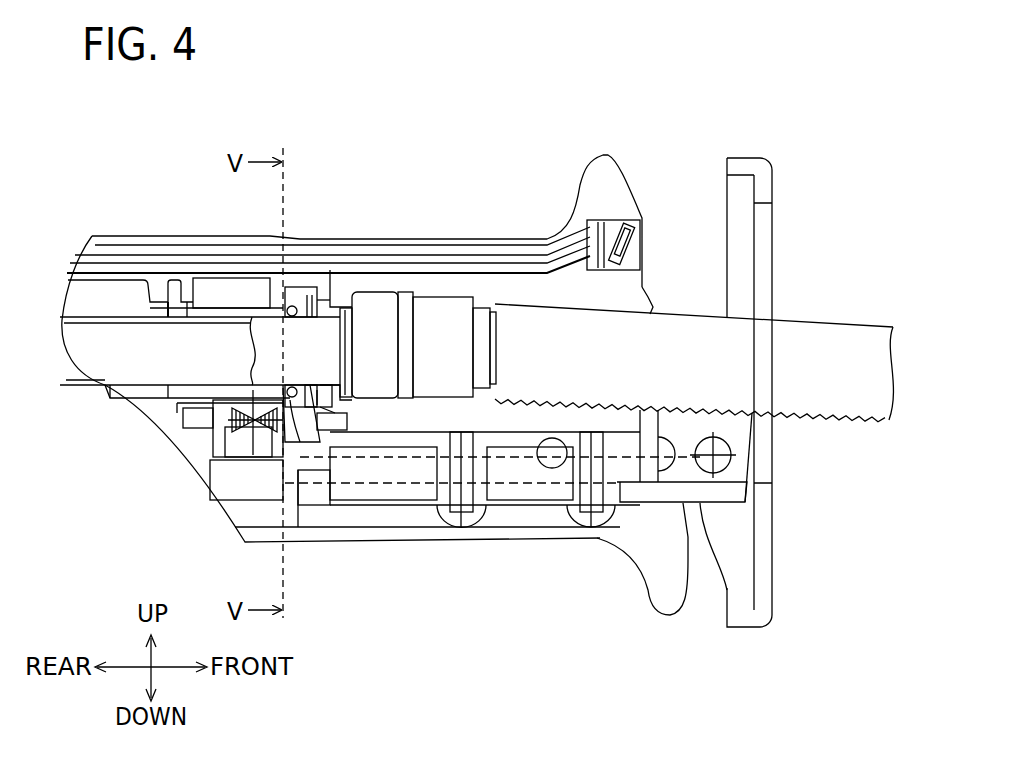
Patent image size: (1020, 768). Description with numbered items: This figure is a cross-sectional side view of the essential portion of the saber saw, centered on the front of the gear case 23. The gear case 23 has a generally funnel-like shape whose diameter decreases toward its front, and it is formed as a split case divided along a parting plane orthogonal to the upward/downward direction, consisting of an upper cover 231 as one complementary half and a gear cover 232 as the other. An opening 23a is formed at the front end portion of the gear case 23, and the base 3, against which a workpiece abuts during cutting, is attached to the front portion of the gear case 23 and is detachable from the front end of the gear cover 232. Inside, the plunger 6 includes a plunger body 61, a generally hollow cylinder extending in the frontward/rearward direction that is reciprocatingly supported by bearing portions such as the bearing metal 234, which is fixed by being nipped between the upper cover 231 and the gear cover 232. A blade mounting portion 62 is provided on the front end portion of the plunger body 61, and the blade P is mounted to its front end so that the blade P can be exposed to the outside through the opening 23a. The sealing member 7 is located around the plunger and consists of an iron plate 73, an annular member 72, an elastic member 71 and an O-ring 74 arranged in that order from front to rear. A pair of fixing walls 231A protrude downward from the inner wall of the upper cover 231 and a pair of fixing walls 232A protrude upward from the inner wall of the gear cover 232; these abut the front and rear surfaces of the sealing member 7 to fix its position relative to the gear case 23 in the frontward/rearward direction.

The base 3 is at (742, 185).
The plunger 6 is at (106, 387).
The sealing member 7 is at (307, 285).
The gear case 23 is at (463, 236).
The opening 23a is at (645, 286).
The plunger body 61 is at (120, 335).
The blade mounting portion 62 is at (378, 300).
The elastic member 71 is at (296, 432).
The annular member 72 is at (318, 428).
The iron plate 73 is at (345, 420).
The O-ring 74 is at (282, 428).
The upper cover 231 is at (104, 250).
The fixing walls 231A is at (282, 297).
The gear cover 232 is at (522, 515).
The fixing walls 232A is at (275, 427).
The bearing metal 234 is at (232, 308).
The blade P is at (845, 387).